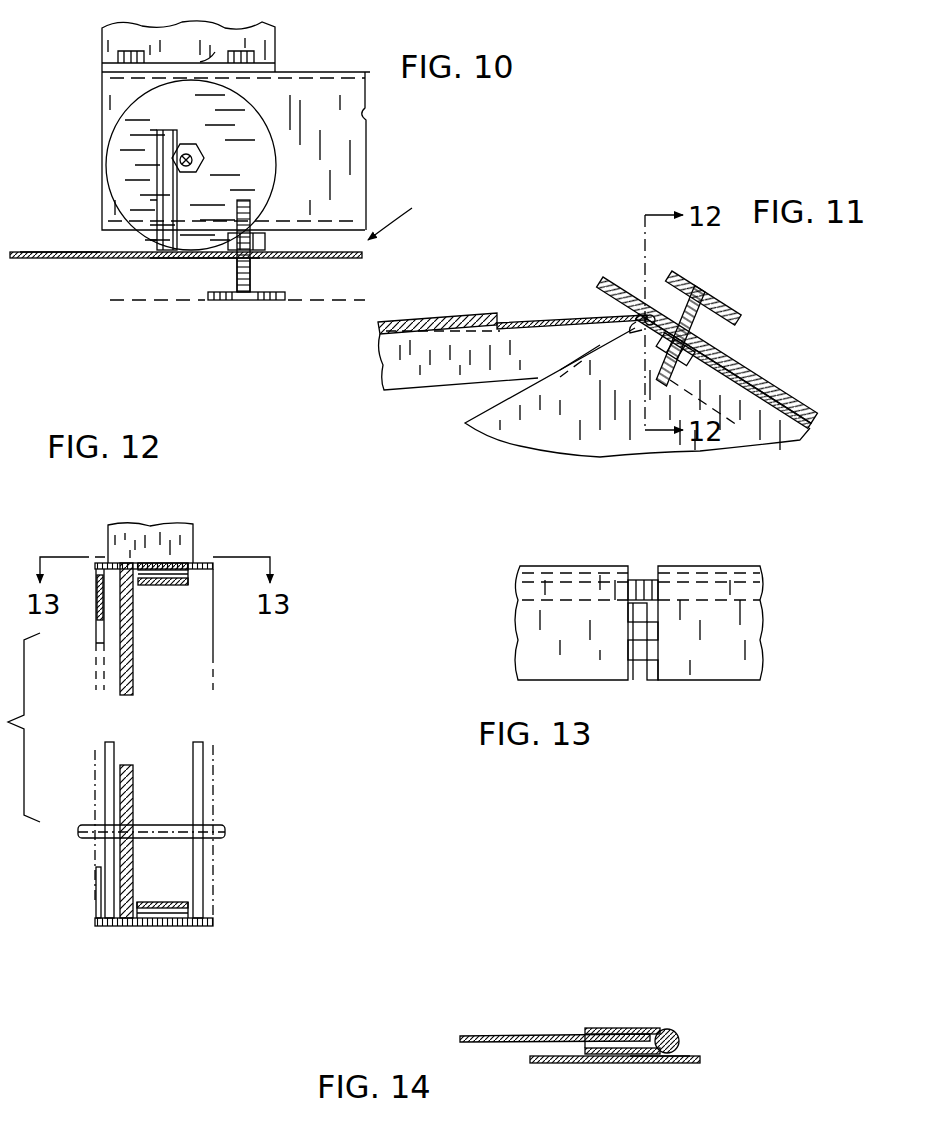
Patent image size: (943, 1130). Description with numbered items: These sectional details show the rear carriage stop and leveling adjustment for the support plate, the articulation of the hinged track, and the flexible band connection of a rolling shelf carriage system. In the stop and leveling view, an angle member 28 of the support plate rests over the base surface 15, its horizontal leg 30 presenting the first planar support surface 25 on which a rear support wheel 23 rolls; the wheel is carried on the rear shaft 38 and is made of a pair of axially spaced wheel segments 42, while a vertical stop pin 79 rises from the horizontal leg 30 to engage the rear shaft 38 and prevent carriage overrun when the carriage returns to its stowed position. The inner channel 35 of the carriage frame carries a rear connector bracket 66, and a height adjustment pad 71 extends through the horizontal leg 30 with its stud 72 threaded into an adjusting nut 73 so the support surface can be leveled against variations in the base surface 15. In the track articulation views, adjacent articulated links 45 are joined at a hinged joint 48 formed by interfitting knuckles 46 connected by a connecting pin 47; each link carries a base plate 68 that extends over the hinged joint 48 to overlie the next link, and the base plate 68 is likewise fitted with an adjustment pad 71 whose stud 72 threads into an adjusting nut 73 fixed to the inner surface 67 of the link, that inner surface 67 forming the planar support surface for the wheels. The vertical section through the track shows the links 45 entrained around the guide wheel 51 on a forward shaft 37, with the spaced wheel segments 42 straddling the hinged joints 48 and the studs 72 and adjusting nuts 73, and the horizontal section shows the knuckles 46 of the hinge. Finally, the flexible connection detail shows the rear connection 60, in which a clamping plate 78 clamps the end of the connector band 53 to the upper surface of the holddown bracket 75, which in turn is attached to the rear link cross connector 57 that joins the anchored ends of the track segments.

In FIG. 10, the base surface 15 is at (338, 297).
In FIG. 10, the rear support wheel 23 is at (253, 107).
In FIG. 10, the first planar support surface 25 is at (82, 250).
In FIG. 10, the angle member 28 is at (68, 258).
In FIG. 10, the horizontal leg 30 is at (210, 258).
In FIG. 10, the inner channel 35 is at (362, 118).
In FIG. 12, the forward shaft 37 is at (213, 842).
In FIG. 10, the rear shaft 38 is at (207, 148).
In FIG. 10, the wheel segment 42 is at (118, 155).
In FIG. 12, the wheel segment 42 is at (105, 752).
In FIG. 11, the articulated link 45 is at (568, 322).
In FIG. 12, the articulated link 45 is at (104, 562).
In FIG. 13, the articulated link 45 is at (673, 573).
In FIG. 13, the interfitting knuckle 46 is at (640, 662).
In FIG. 11, the connecting pin 47 is at (651, 314).
In FIG. 12, the connecting pin 47 is at (185, 562).
In FIG. 11, the hinged joint 48 is at (646, 325).
In FIG. 12, the hinged joint 48 is at (162, 586).
In FIG. 12, the guide wheel 51 is at (135, 655).
In FIG. 14, the connector band 53 is at (510, 1035).
In FIG. 14, the rear link cross connector 57 is at (550, 1065).
In FIG. 14, the rear connection 60 is at (638, 1026).
In FIG. 10, the rear connector bracket 66 is at (268, 53).
In FIG. 11, the inner surface 67 is at (798, 440).
In FIG. 11, the base plate 68 is at (757, 365).
In FIG. 12, the base plate 68 is at (172, 522).
In FIG. 10, the height adjustment pad 71 is at (245, 302).
In FIG. 11, the height adjustment pad 71 is at (715, 300).
In FIG. 10, the stud 72 is at (255, 277).
In FIG. 11, the stud 72 is at (702, 345).
In FIG. 10, the adjusting nut 73 is at (263, 237).
In FIG. 11, the adjusting nut 73 is at (702, 364).
In FIG. 14, the holddown bracket 75 is at (650, 1063).
In FIG. 14, the clamping plate 78 is at (612, 1028).
In FIG. 10, the vertical stop pin 79 is at (170, 203).